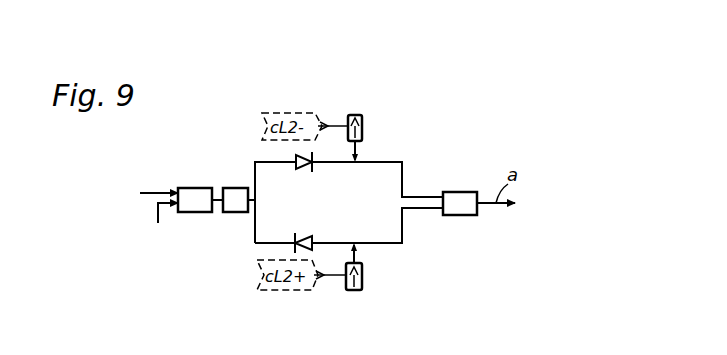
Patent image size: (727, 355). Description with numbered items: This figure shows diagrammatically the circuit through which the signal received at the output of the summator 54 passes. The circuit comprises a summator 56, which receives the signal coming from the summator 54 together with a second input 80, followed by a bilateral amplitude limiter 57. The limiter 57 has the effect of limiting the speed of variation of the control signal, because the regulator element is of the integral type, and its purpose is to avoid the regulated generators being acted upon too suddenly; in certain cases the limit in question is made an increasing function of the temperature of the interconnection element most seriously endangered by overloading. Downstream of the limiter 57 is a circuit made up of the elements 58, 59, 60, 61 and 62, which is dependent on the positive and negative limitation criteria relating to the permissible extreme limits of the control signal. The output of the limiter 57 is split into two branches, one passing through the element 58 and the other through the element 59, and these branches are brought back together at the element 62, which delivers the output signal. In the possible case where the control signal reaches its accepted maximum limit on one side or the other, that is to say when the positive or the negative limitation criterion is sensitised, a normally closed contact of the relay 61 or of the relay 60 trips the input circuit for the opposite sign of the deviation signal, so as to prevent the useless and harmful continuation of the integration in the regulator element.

The summator 54 is at (151, 181).
The input signal from element 80 is at (160, 227).
The summator 56 is at (196, 188).
The bilateral amplitude limiter 57 is at (237, 188).
The circuit element dependent on limitation criteria 58 is at (305, 167).
The circuit element dependent on limitation criteria 59 is at (302, 236).
The relay 60 is at (360, 152).
The relay 61 is at (356, 255).
The circuit element dependent on limitation criteria 62 is at (457, 192).